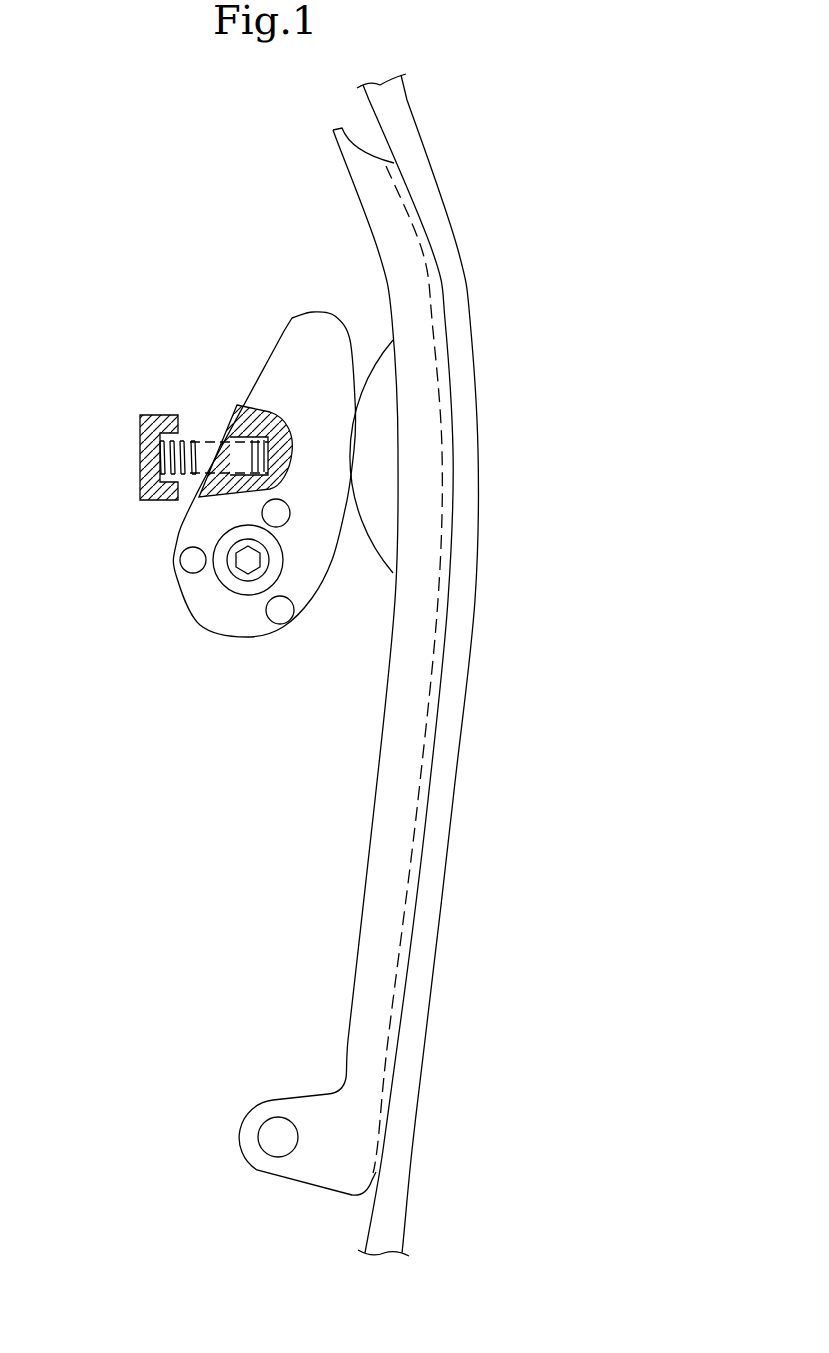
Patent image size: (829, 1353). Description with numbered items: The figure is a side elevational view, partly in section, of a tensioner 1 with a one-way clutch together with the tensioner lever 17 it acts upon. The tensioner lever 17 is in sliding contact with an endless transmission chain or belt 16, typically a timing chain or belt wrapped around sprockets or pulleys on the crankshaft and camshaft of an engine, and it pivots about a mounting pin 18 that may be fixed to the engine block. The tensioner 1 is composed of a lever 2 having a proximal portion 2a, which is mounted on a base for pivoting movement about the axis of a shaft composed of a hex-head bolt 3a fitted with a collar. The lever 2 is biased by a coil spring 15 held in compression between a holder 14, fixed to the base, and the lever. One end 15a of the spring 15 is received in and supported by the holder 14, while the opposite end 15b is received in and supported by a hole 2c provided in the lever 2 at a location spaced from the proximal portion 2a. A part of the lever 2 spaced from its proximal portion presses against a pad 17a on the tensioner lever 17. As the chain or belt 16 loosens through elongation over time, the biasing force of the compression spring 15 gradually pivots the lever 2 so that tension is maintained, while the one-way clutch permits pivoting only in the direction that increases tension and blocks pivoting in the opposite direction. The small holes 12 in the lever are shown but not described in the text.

The tensioner 1 is at (131, 369).
The lever 2 is at (297, 338).
The proximal portion 2a is at (214, 586).
The hole 2c is at (285, 437).
The hex-head bolt 3a is at (248, 565).
The mounting holes 12 is at (187, 560).
The holder 14 is at (143, 413).
The coil spring 15 is at (161, 407).
The end of spring 15a is at (155, 453).
The opposite end of spring 15b is at (235, 437).
The endless transmission chain or belt 16 is at (427, 182).
The tensioner lever 17 is at (329, 661).
The pad 17a is at (384, 371).
The mounting pin 18 is at (275, 1129).